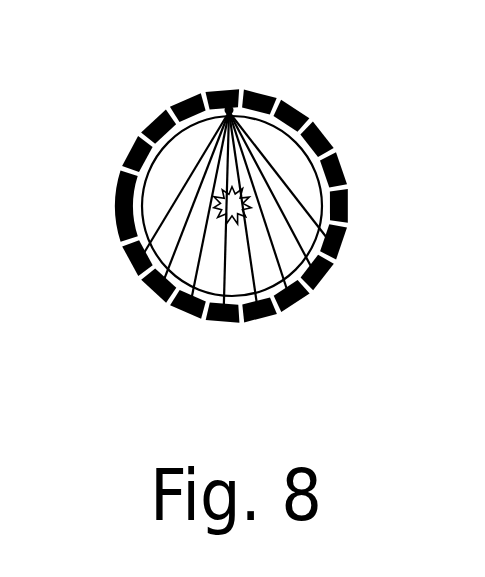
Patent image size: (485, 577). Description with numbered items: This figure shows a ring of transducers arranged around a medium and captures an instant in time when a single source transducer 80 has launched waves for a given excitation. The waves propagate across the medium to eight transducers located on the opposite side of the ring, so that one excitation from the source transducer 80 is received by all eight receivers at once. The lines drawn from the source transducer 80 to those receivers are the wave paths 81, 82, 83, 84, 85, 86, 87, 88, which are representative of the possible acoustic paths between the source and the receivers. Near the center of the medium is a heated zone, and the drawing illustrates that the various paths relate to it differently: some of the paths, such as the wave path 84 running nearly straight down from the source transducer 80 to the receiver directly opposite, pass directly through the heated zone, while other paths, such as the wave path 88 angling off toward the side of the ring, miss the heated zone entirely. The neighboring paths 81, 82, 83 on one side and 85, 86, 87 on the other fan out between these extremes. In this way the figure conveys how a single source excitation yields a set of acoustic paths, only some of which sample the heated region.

The source transducer 80 is at (225, 92).
The wave path 81 is at (125, 255).
The wave path 82 is at (152, 292).
The wave path 83 is at (183, 312).
The wave path 84 is at (218, 317).
The wave path 85 is at (260, 318).
The wave path 86 is at (295, 303).
The wave path 87 is at (327, 280).
The wave path 88 is at (343, 243).